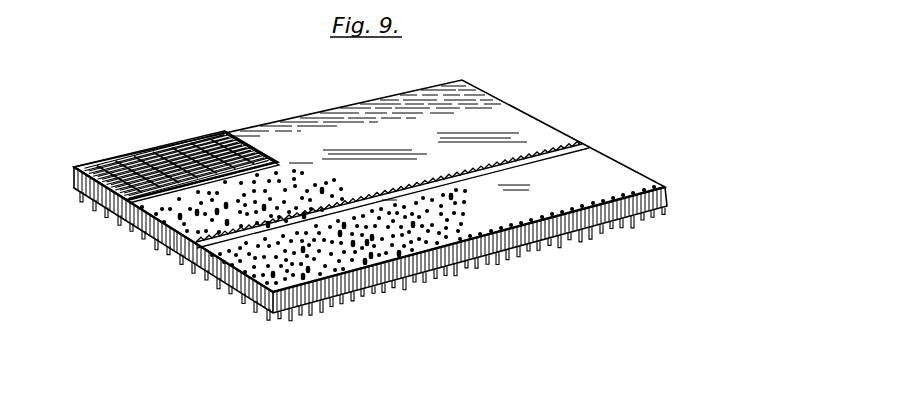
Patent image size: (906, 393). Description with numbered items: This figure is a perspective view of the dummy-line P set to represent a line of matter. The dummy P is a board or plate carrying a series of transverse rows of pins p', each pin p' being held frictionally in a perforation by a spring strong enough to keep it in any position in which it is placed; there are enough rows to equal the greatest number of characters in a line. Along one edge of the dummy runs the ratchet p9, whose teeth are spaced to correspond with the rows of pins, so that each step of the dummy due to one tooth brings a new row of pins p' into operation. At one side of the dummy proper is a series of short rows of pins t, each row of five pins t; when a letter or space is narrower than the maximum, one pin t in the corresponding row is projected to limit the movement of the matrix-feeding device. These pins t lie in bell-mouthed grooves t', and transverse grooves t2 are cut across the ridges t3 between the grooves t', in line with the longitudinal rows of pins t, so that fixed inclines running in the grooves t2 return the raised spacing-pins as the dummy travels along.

The pin t is at (351, 200).
The bell-mouthed groove t' is at (176, 167).
The transverse groove t2 is at (139, 162).
The ridge t3 is at (184, 147).
The dummy-line P is at (394, 143).
The pin p' is at (398, 224).
The ratchet p9 is at (460, 177).